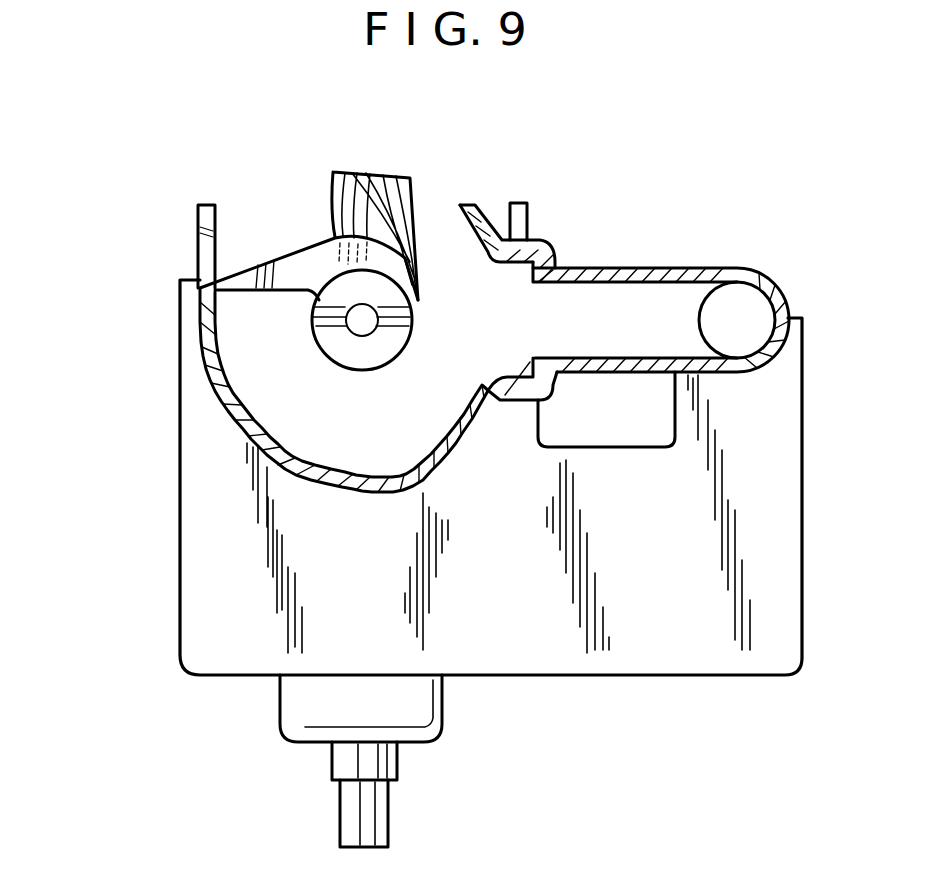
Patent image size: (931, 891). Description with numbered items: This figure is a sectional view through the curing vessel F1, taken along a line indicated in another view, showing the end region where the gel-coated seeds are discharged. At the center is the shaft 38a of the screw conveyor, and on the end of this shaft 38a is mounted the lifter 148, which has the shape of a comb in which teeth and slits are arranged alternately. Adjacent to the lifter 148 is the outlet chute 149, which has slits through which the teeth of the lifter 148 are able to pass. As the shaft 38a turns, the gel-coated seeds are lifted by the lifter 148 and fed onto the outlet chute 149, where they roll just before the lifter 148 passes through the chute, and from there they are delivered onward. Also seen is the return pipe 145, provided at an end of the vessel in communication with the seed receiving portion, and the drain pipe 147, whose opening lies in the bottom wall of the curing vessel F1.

The return pipe 145 is at (640, 268).
The drain pipe 147 is at (389, 810).
The lifter 148 is at (372, 172).
The outlet chute 149 is at (277, 260).
The shaft 38a is at (365, 336).
The curing vessel F1 is at (160, 402).